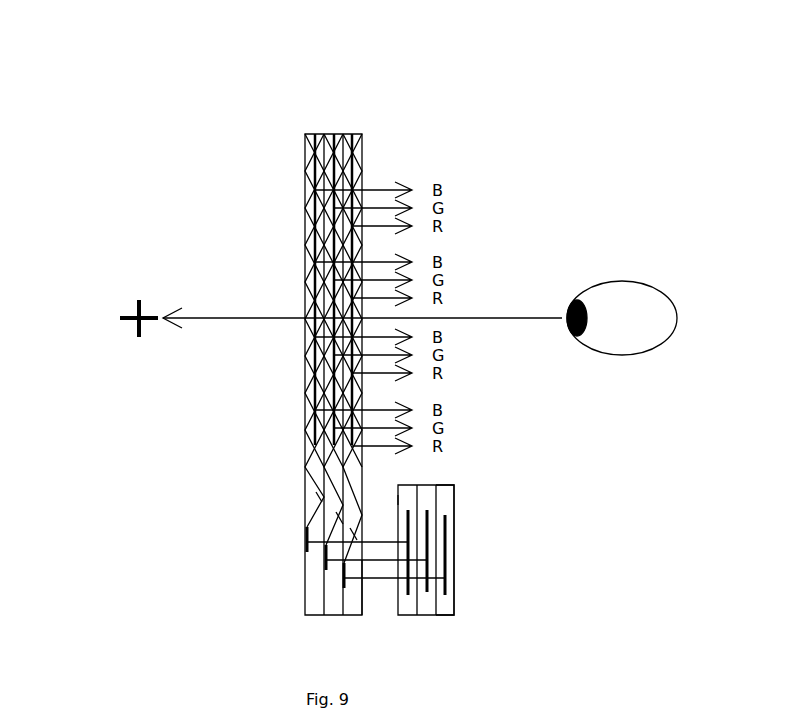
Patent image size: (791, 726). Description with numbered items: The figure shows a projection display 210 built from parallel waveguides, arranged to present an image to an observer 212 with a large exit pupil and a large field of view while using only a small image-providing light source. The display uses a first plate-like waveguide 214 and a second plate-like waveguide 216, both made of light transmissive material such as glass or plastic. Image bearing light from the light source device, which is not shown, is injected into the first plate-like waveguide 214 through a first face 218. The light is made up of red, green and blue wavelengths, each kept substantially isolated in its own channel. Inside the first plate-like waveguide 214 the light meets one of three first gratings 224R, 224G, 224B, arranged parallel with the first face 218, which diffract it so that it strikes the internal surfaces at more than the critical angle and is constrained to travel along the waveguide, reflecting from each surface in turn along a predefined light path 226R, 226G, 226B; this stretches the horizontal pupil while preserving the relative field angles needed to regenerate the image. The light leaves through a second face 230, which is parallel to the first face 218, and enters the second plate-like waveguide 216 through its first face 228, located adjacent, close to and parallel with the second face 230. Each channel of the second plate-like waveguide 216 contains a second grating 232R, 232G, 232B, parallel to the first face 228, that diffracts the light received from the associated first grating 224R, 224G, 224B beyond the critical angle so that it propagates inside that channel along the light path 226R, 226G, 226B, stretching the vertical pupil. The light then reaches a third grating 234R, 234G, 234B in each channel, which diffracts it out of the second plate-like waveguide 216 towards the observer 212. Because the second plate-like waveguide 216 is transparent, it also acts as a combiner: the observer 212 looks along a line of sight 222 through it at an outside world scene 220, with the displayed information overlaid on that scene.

The projection display 210 is at (567, 205).
The observer 212 is at (640, 300).
The first plate-like waveguide 214 is at (450, 606).
The second plate-like waveguide 216 is at (308, 612).
The first face 218 is at (455, 530).
The outside world scene 220 is at (135, 312).
The line of sight 222 is at (238, 316).
The first grating 224B is at (408, 598).
The first grating 224G is at (427, 515).
The first grating 224R is at (446, 558).
The predefined light path 226B is at (322, 500).
The predefined light path 226G is at (343, 522).
The predefined light path 226R is at (357, 537).
The first face 228 is at (365, 606).
The second face 230 is at (396, 502).
The second grating 232B is at (306, 545).
The second grating 232G is at (325, 562).
The second grating 232R is at (343, 580).
The third grating 234B is at (305, 134).
The third grating 234G is at (330, 134).
The third grating 234R is at (362, 135).